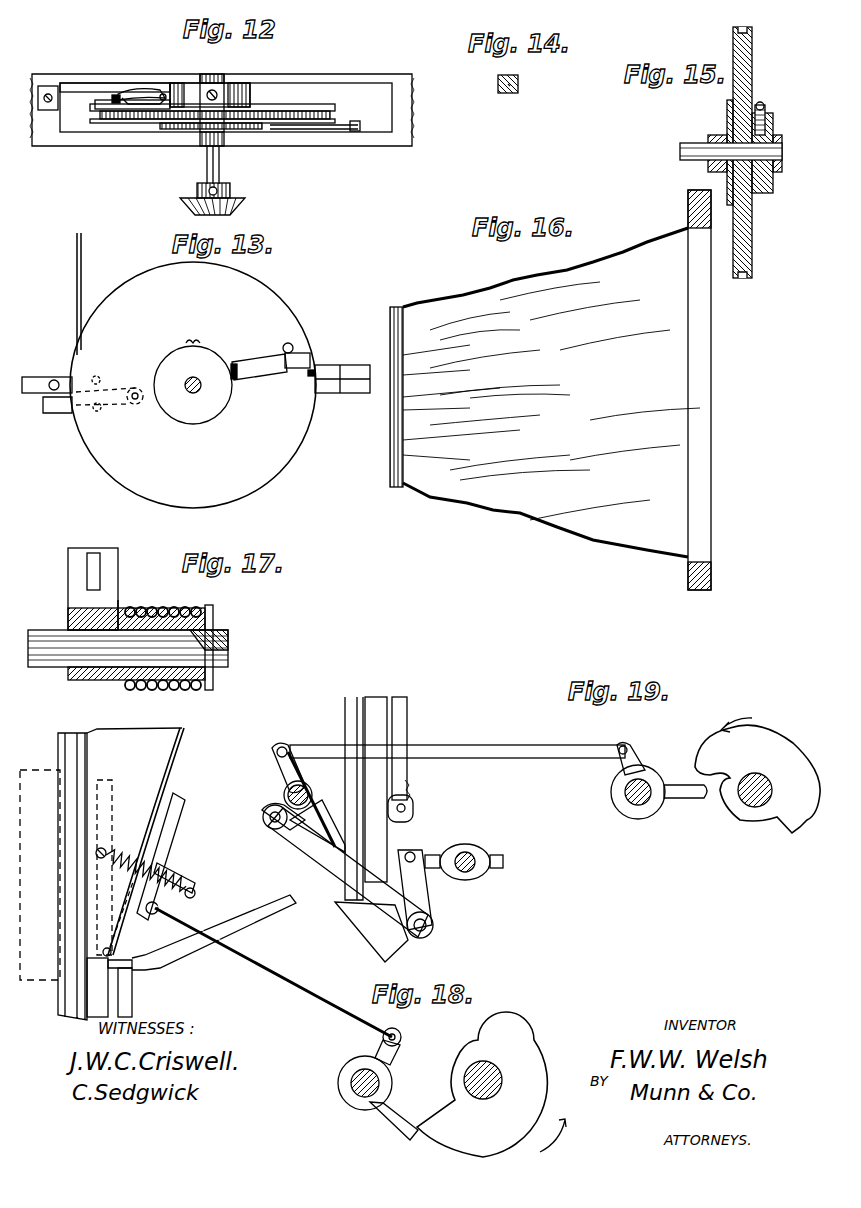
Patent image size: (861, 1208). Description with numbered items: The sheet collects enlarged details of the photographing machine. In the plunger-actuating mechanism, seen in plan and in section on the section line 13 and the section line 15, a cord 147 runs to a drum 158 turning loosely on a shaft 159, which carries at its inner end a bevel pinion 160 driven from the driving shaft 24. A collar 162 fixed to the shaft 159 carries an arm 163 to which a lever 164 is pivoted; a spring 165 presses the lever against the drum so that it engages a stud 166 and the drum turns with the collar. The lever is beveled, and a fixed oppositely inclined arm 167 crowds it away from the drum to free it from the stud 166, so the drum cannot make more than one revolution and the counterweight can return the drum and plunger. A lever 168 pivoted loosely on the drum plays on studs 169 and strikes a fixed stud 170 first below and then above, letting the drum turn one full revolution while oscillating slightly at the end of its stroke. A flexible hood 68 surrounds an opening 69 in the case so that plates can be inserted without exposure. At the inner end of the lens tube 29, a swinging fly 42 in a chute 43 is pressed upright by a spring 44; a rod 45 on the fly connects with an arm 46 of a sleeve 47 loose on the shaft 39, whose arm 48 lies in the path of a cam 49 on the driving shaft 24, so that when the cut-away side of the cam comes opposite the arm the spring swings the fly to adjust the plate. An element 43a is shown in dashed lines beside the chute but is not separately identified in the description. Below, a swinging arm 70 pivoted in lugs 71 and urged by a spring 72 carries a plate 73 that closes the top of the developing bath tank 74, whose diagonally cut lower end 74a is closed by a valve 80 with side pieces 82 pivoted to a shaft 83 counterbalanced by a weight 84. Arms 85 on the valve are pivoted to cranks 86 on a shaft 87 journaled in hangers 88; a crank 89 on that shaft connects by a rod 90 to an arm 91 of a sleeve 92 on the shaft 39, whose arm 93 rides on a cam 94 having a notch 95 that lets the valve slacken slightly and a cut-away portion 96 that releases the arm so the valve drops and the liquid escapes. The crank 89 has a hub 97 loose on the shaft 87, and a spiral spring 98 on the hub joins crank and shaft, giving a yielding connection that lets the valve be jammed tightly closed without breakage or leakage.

In FIG. 12, the section line 13— 13 is at (440, 84).
In FIG. 12, the section line 15— 15 is at (237, 165).
In FIG. 18, the driving shaft 24 is at (495, 1068).
In FIG. 19, the driving shaft 24 is at (750, 808).
In FIG. 18, the lens tube 29 is at (40, 875).
In FIG. 18, the shaft 39 is at (365, 1090).
In FIG. 19, the shaft 39 is at (634, 800).
In FIG. 18, the swinging fly 42 is at (170, 830).
In FIG. 18, the chute 43 is at (156, 762).
In FIG. 18, the slide bar 43a is at (78, 782).
In FIG. 18, the spring 44 is at (178, 870).
In FIG. 18, the rod 45 is at (322, 1010).
In FIG. 18, the arm 46 is at (405, 1044).
In FIG. 18, the sleeve 47 is at (352, 1062).
In FIG. 18, the arm 48 is at (398, 1118).
In FIG. 18, the cam 49 is at (491, 1084).
In FIG. 16, the flexible hood 68 is at (545, 392).
In FIG. 16, the opening 69 is at (711, 325).
In FIG. 18, the swinging arm 70 is at (132, 1000).
In FIG. 18, the lugs 71 is at (413, 808).
In FIG. 18, the spring 72 is at (410, 790).
In FIG. 18, the plate 73 is at (128, 955).
In FIG. 18, the developing bath tank 74 is at (400, 825).
In FIG. 18, the diagonally cut lower end of bath tank 74a is at (365, 912).
In FIG. 18, the valve 80 is at (415, 940).
In FIG. 18, the side pieces 82 is at (415, 885).
In FIG. 18, the shaft 83 is at (413, 853).
In FIG. 18, the weight 84 is at (475, 848).
In FIG. 18, the arms 85 is at (330, 858).
In FIG. 18, the cranks 86 is at (280, 800).
In FIG. 17, the shaft 87 is at (228, 648).
In FIG. 18, the shaft 87 is at (320, 748).
In FIG. 18, the hangers 88 is at (318, 800).
In FIG. 17, the crank 89 is at (112, 600).
In FIG. 18, the crank 89 is at (290, 745).
In FIG. 17, the rod 90 is at (93, 553).
In FIG. 18, the rod 90 is at (470, 745).
In FIG. 19, the arm 91 is at (635, 760).
In FIG. 19, the sleeve 92 is at (650, 782).
In FIG. 19, the arm 93 is at (692, 798).
In FIG. 19, the cam 94 is at (775, 738).
In FIG. 19, the notch 95 is at (792, 833).
In FIG. 19, the cut-away portion of cam 96 is at (773, 832).
In FIG. 17, the hub 97 is at (209, 605).
In FIG. 17, the spiral spring 98 is at (175, 594).
In FIG. 13, the cord 147 is at (81, 283).
In FIG. 12, the drum 158 is at (282, 102).
In FIG. 15, the drum 158 is at (752, 92).
In FIG. 13, the drum 158 is at (193, 385).
In FIG. 12, the shaft 159 is at (205, 172).
In FIG. 15, the shaft 159 is at (715, 146).
In FIG. 13, the shaft 159 is at (196, 392).
In FIG. 12, the bevel pinion 160 is at (227, 206).
In FIG. 12, the collar 162 is at (190, 88).
In FIG. 15, the collar 162 is at (776, 110).
In FIG. 13, the collar 162 is at (213, 400).
In FIG. 12, the arm 163 is at (152, 98).
In FIG. 13, the arm 163 is at (262, 380).
In FIG. 12, the lever 164 is at (118, 80).
In FIG. 14, the lever 164 is at (498, 84).
In FIG. 13, the lever 164 is at (310, 357).
In FIG. 12, the spring 165 is at (140, 88).
In FIG. 13, the stud 166 is at (290, 343).
In FIG. 14, the arm 167 is at (518, 88).
In FIG. 13, the arm 167 is at (325, 365).
In FIG. 13, the lever 168 is at (60, 413).
In FIG. 13, the studs 169 is at (106, 420).
In FIG. 13, the fixed stud 170 is at (50, 376).